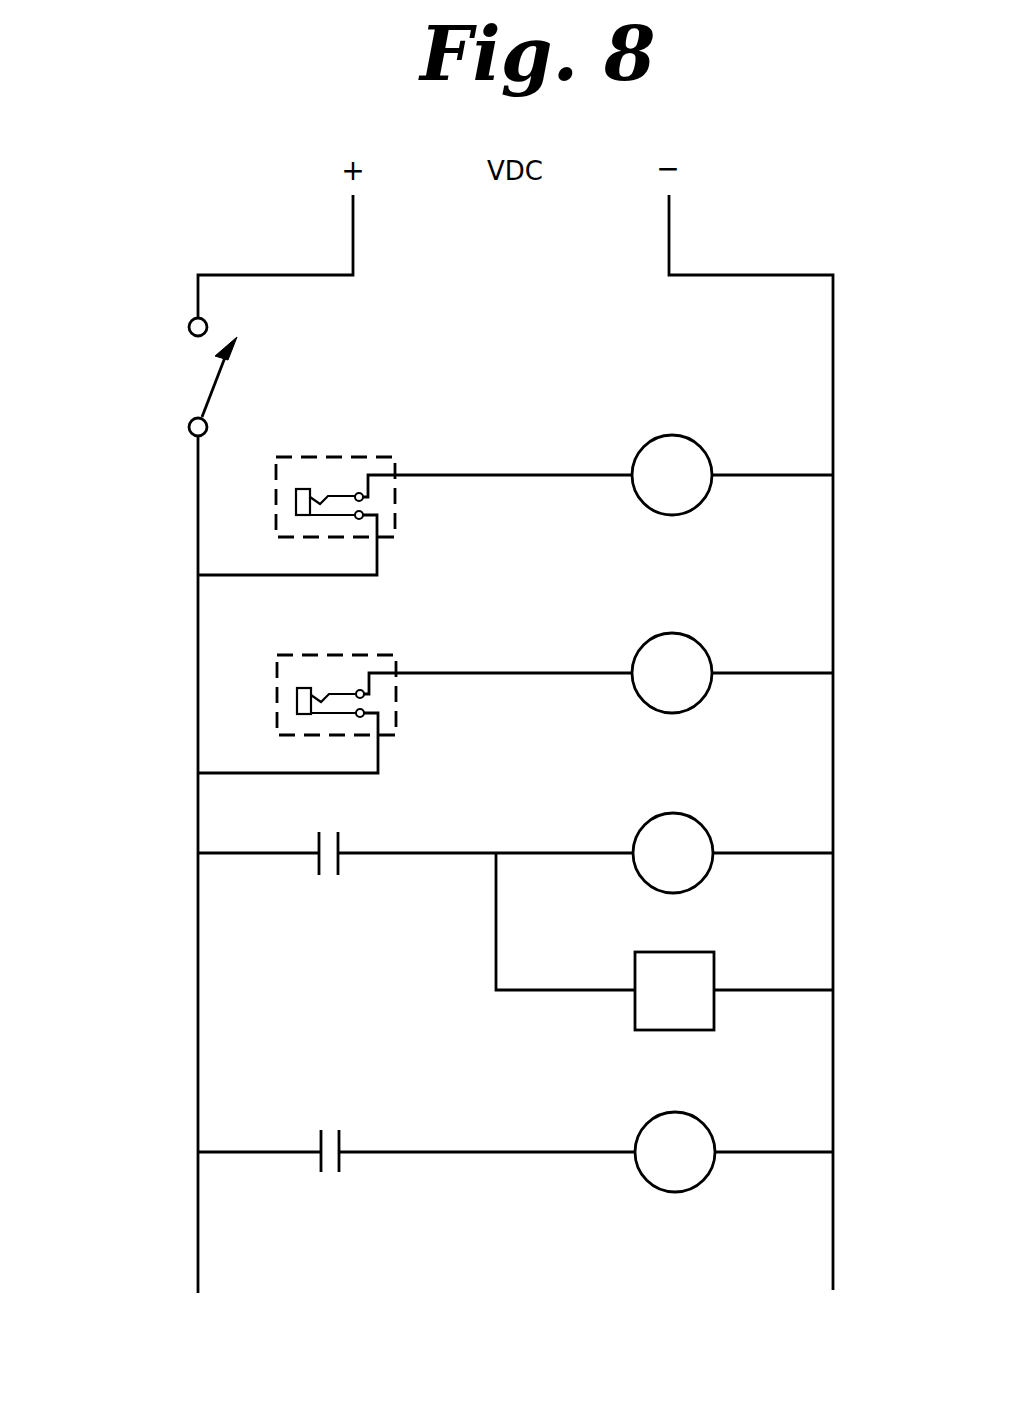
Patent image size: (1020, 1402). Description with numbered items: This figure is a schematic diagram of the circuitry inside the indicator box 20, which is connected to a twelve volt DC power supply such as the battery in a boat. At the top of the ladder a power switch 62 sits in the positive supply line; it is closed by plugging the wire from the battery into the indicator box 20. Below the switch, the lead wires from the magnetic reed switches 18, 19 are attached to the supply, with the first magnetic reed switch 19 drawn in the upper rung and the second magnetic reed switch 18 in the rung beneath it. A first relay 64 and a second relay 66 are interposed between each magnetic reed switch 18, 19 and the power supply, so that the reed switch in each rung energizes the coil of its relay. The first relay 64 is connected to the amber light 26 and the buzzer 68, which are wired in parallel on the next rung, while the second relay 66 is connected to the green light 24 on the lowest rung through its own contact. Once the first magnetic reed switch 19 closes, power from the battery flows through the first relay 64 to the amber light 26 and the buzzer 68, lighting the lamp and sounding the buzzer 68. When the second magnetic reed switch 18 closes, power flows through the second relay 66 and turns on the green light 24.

The indicator box 20 is at (182, 988).
The power switch 62 is at (206, 393).
The first magnetic reed switch 19 is at (395, 510).
The second magnetic reed switch 18 is at (397, 710).
The first relay 64 is at (700, 448).
The second relay 66 is at (700, 645).
The amber light 26 is at (648, 825).
The buzzer 68 is at (708, 950).
The green light 24 is at (641, 1127).